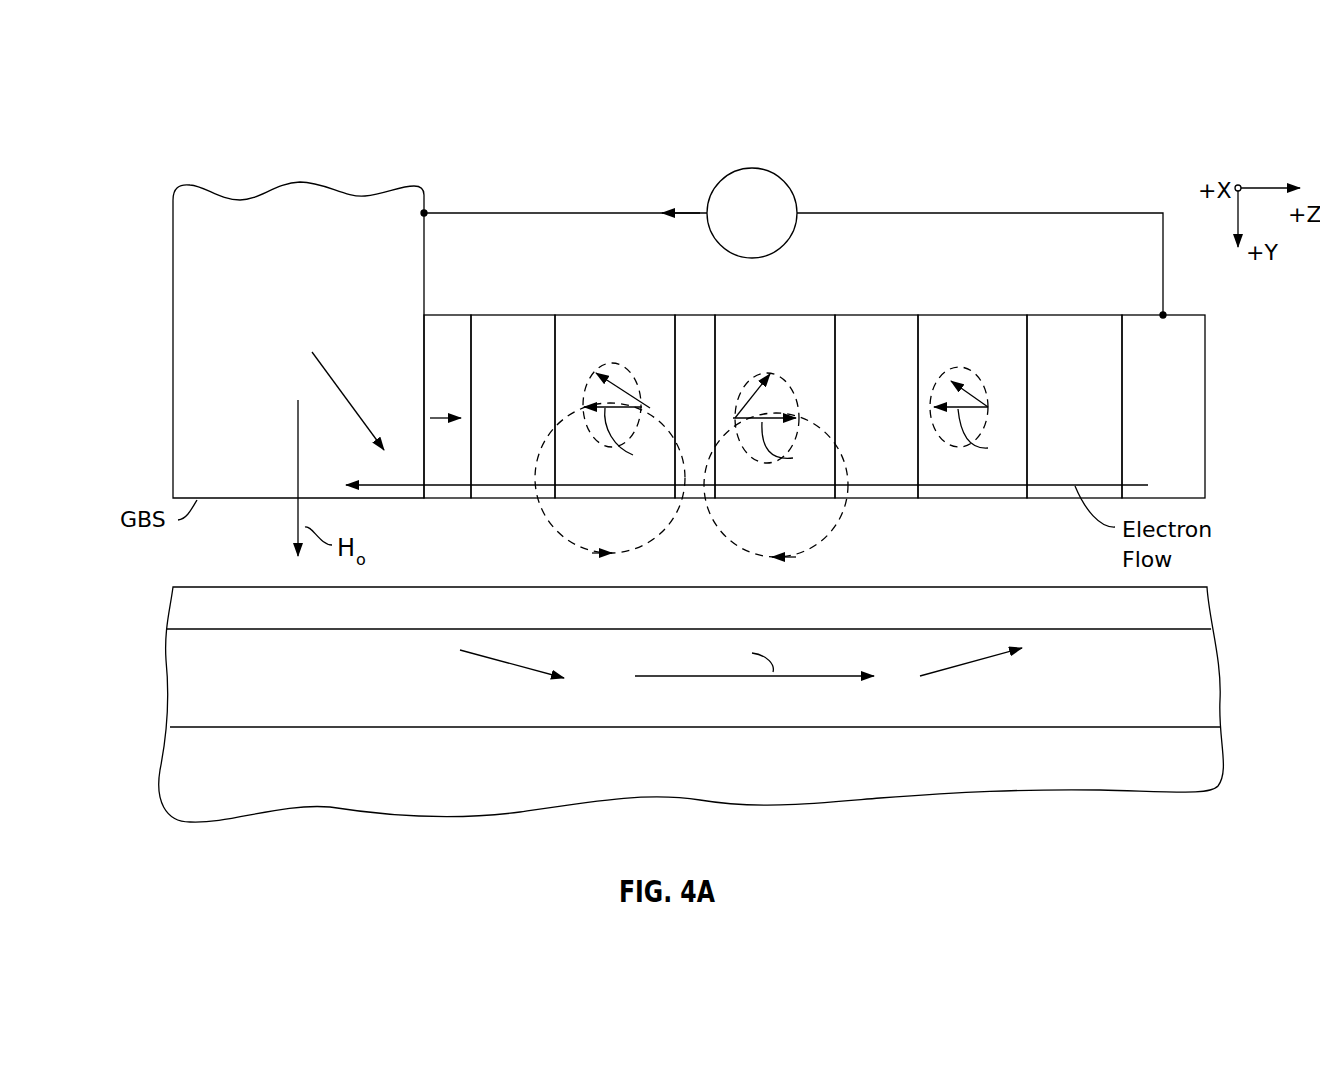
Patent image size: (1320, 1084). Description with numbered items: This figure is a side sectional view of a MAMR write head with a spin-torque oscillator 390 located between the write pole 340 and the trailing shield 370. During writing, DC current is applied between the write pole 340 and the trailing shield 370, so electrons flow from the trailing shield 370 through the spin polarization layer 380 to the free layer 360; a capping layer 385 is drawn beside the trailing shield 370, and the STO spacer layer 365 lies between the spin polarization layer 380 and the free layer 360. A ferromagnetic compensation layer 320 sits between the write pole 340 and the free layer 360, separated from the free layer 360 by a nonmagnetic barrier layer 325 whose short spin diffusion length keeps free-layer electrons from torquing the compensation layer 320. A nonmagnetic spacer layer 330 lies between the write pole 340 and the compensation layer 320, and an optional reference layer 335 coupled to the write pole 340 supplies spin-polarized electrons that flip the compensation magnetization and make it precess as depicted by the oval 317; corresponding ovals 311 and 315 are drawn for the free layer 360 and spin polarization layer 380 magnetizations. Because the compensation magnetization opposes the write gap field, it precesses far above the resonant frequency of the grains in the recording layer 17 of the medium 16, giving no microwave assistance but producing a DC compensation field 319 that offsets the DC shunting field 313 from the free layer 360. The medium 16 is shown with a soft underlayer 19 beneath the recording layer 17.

The write pole (WP) 340 is at (190, 275).
The reference layer 335 is at (450, 315).
The spacer layer 330 is at (517, 315).
The compensation layer 320 is at (608, 315).
The barrier layer (BL) 325 is at (695, 315).
The free layer 360 is at (793, 315).
The STO spacer layer 365 is at (880, 315).
The spin polarization layer (SPL) 380 is at (977, 315).
The capping layer 385 is at (1075, 315).
The trailing shield (TS) 370 is at (1190, 315).
The spin-torque oscillator (STO) 390 is at (1027, 162).
The oval representing precession of m_c 317 is at (606, 450).
The DC compensation field 319 is at (568, 540).
The free layer magnetization 311 is at (762, 465).
The DC shunting field 313 is at (813, 540).
The spin polarization layer magnetization 315 is at (950, 450).
The recording medium 16 is at (146, 831).
The recording layer (RL) 17 is at (1190, 609).
The soft underlayer (SUL) 19 is at (1190, 683).